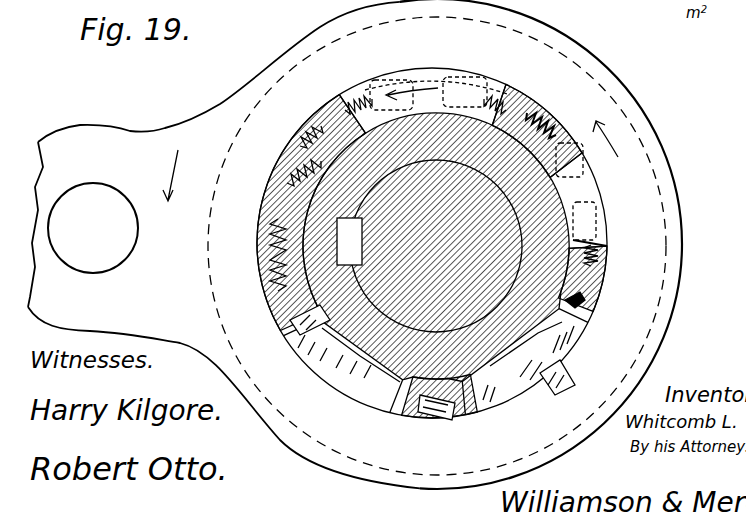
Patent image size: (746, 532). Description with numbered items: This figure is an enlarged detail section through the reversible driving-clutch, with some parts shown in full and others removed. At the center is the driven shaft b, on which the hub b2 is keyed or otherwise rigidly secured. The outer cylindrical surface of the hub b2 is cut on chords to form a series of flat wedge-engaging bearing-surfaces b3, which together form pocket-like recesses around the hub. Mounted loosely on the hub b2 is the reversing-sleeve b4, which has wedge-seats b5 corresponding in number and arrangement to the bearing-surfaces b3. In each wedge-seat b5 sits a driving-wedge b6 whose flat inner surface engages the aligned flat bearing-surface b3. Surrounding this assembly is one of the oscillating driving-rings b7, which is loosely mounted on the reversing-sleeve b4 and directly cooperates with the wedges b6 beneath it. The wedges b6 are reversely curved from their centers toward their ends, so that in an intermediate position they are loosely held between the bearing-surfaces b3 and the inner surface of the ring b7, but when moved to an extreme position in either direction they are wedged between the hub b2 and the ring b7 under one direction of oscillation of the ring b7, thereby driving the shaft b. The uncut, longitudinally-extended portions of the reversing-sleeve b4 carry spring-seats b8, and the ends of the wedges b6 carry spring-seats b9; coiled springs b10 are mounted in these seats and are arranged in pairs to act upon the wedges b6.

The driven shaft b is at (507, 224).
The hub b2 is at (415, 375).
The wedge engaging surfaces b3 is at (536, 333).
The reversing-sleeve b4 is at (327, 115).
The wedge-seats b5 is at (295, 140).
The driving-wedge b6 is at (445, 85).
The oscillating driving-ring b7 is at (103, 145).
The spring-seats b8 is at (297, 170).
The spring-seats b9 is at (352, 90).
The coiled springs b10 is at (372, 100).